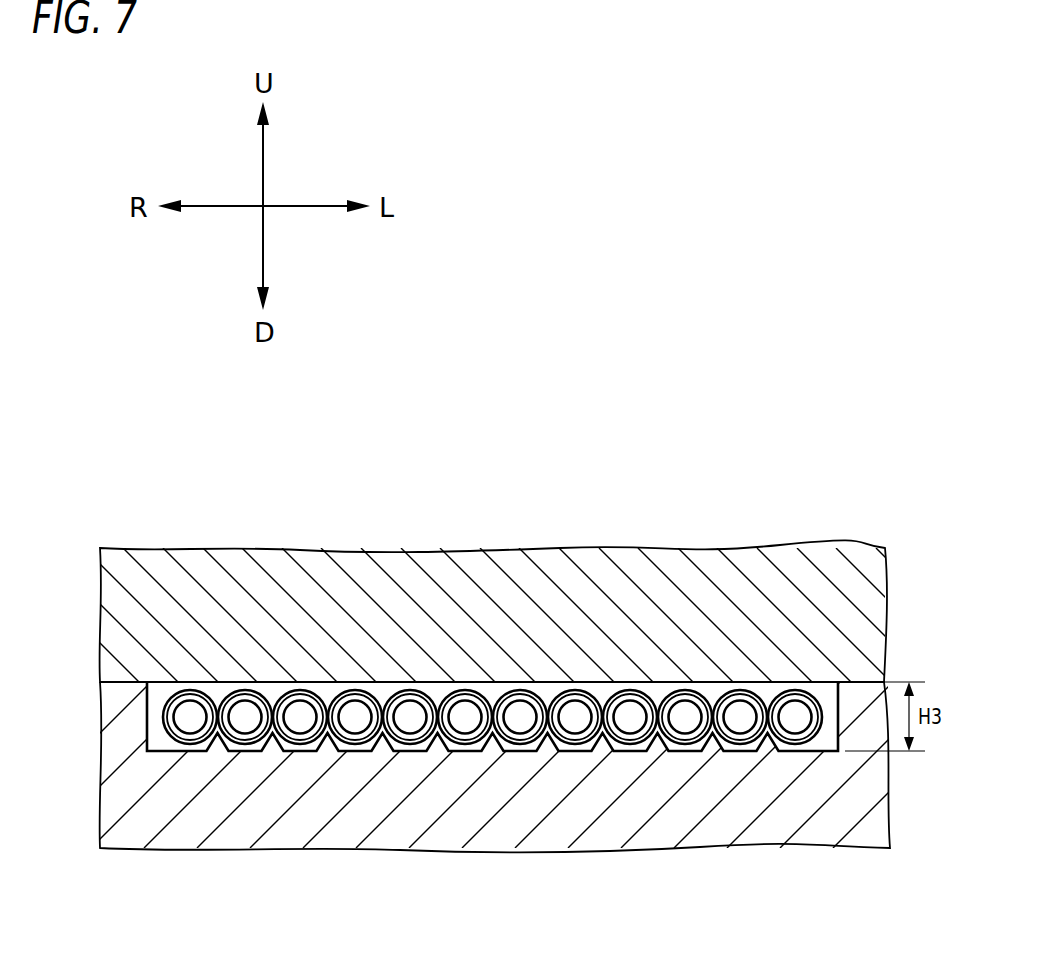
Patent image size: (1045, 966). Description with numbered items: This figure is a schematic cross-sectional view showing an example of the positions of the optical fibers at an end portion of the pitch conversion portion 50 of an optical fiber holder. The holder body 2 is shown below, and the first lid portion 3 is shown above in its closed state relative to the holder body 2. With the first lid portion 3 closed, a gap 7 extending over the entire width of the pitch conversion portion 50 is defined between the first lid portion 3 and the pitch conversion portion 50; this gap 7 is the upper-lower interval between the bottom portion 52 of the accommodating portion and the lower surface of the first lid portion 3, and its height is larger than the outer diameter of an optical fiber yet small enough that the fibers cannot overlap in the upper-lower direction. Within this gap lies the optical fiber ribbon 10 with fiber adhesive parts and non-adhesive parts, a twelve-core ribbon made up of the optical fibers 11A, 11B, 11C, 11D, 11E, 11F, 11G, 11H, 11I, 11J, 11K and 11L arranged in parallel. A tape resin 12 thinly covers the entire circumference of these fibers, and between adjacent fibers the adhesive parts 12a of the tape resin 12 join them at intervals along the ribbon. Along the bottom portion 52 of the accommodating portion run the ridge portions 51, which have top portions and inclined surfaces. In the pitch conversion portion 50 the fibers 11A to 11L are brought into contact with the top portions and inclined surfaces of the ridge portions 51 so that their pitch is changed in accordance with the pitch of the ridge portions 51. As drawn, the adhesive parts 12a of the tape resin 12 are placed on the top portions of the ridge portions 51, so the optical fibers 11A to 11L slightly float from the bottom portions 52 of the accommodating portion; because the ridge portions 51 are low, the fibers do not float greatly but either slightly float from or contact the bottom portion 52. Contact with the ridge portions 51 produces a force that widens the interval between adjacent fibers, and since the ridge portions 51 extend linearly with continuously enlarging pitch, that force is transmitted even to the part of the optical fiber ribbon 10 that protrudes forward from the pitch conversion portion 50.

The holder body 2 is at (653, 797).
The first lid portion 3 is at (675, 603).
The gap 7 is at (328, 682).
The optical fiber ribbon with fiber adhesive parts and non-adhesive parts 10 is at (167, 738).
The optical fiber 11A is at (795, 717).
The optical fiber 11B is at (740, 717).
The optical fiber 11C is at (685, 717).
The optical fiber 11D is at (630, 717).
The optical fiber 11E is at (575, 717).
The optical fiber 11F is at (520, 717).
The optical fiber 11G is at (465, 717).
The optical fiber 11H is at (410, 717).
The optical fiber 11I is at (355, 717).
The optical fiber 11J is at (300, 717).
The optical fiber 11K is at (245, 717).
The optical fiber 11L is at (148, 682).
The tape resin 12 is at (165, 718).
The adhesive part 12a is at (190, 717).
The pitch conversion portion 50 is at (843, 711).
The ridge portion 51 is at (210, 752).
The bottom portion 52 is at (238, 742).